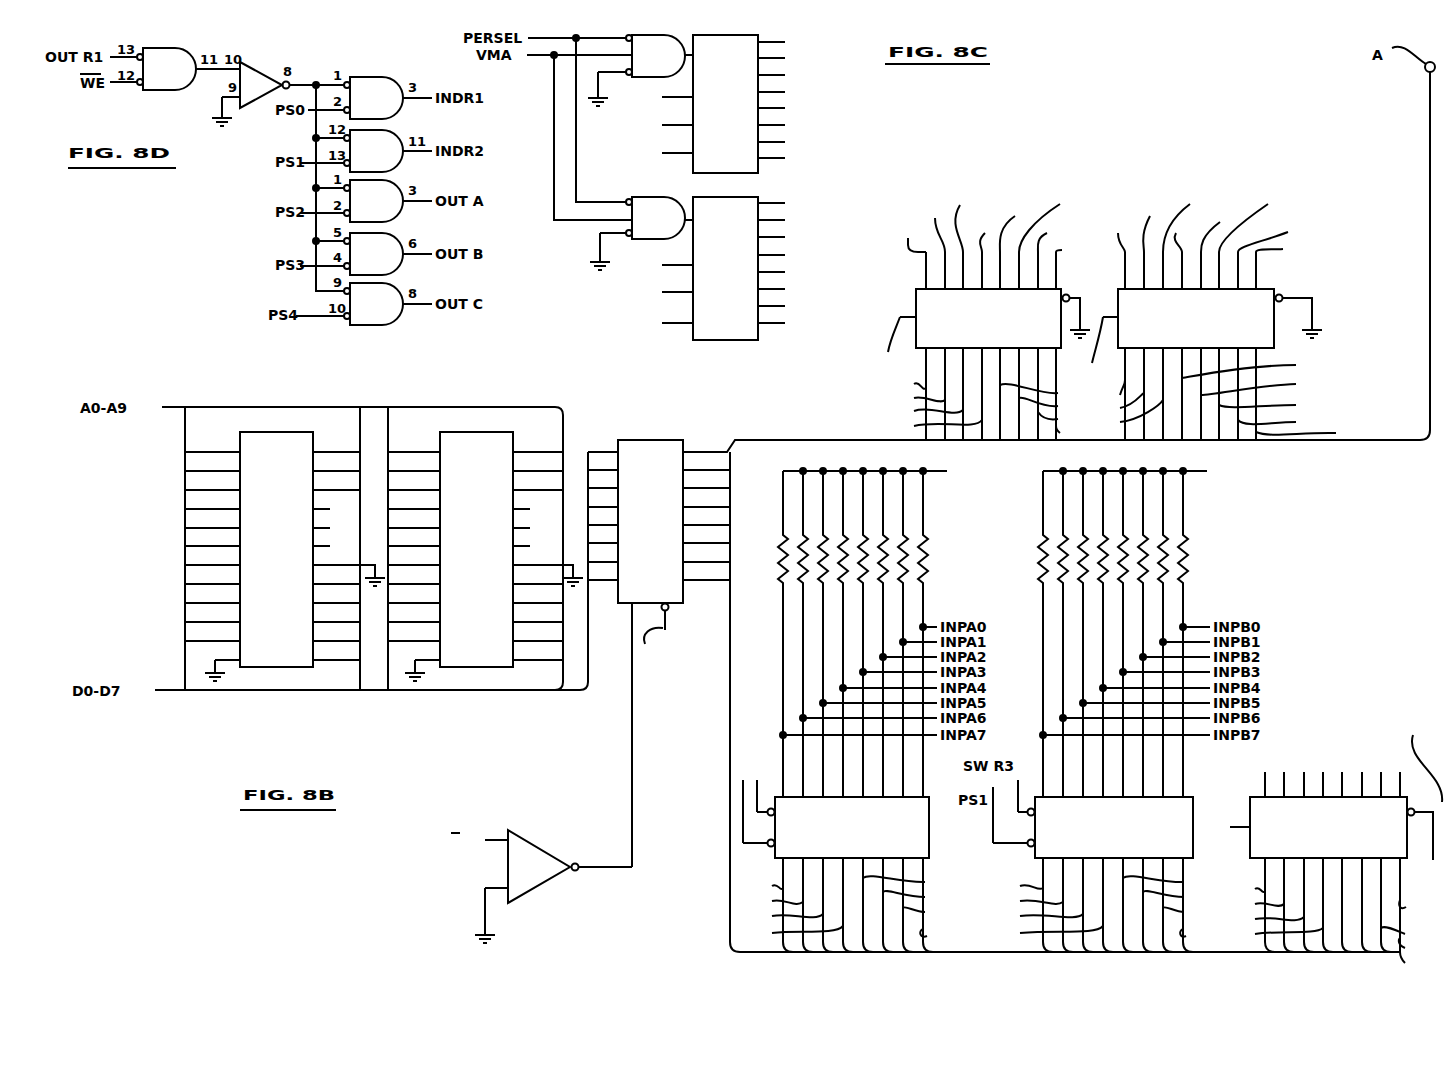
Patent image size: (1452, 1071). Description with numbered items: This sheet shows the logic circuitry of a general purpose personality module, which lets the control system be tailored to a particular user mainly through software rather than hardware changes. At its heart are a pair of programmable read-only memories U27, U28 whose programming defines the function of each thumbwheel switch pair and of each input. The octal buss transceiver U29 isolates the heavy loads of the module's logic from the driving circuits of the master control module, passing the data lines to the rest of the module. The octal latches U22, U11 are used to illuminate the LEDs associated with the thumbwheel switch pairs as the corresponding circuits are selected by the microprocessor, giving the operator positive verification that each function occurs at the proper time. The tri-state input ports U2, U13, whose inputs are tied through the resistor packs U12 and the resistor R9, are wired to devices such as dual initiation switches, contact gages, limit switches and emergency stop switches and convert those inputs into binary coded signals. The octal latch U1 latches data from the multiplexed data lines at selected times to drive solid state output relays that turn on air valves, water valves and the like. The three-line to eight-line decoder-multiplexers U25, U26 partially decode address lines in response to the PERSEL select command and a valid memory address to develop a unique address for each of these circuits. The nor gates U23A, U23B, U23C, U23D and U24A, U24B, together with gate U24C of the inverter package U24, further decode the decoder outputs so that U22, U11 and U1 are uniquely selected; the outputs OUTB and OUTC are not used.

In FIG. 8D, the nor gate U24A is at (169, 69).
In FIG. 8D, the nor gate U24B is at (250, 75).
In FIG. 8D, the nor gate U24C is at (376, 98).
In FIG. 8D, the nor gate U23A is at (376, 151).
In FIG. 8D, the nor gate U23B is at (376, 201).
In FIG. 8D, the nor gate U23C is at (376, 254).
In FIG. 8D, the nor gate U23D is at (376, 304).
In FIG. 8C, the three-line to eight-line decoder-multiplexer U26 is at (714, 97).
In FIG. 8C, the three-line to eight-line decoder-multiplexer U25 is at (704, 263).
In FIG. 8C, the octal latch U22 is at (969, 314).
In FIG. 8C, the octal latch U11 is at (1217, 314).
In FIG. 8B, the programmable read-only memory U27 is at (285, 556).
In FIG. 8B, the programmable read-only memory U28 is at (485, 556).
In FIG. 8B, the octal buss transceiver U29 is at (654, 651).
In FIG. 8B, the nor gate package U24 is at (532, 883).
In FIG. 8B, the resistor pack U12 is at (1005, 630).
In FIG. 8B, the resistor R9 is at (1097, 638).
In FIG. 8B, the tri-state input port U2 is at (849, 865).
In FIG. 8B, the tri-state input port U13 is at (1102, 865).
In FIG. 8B, the octal latch U1 is at (1321, 844).